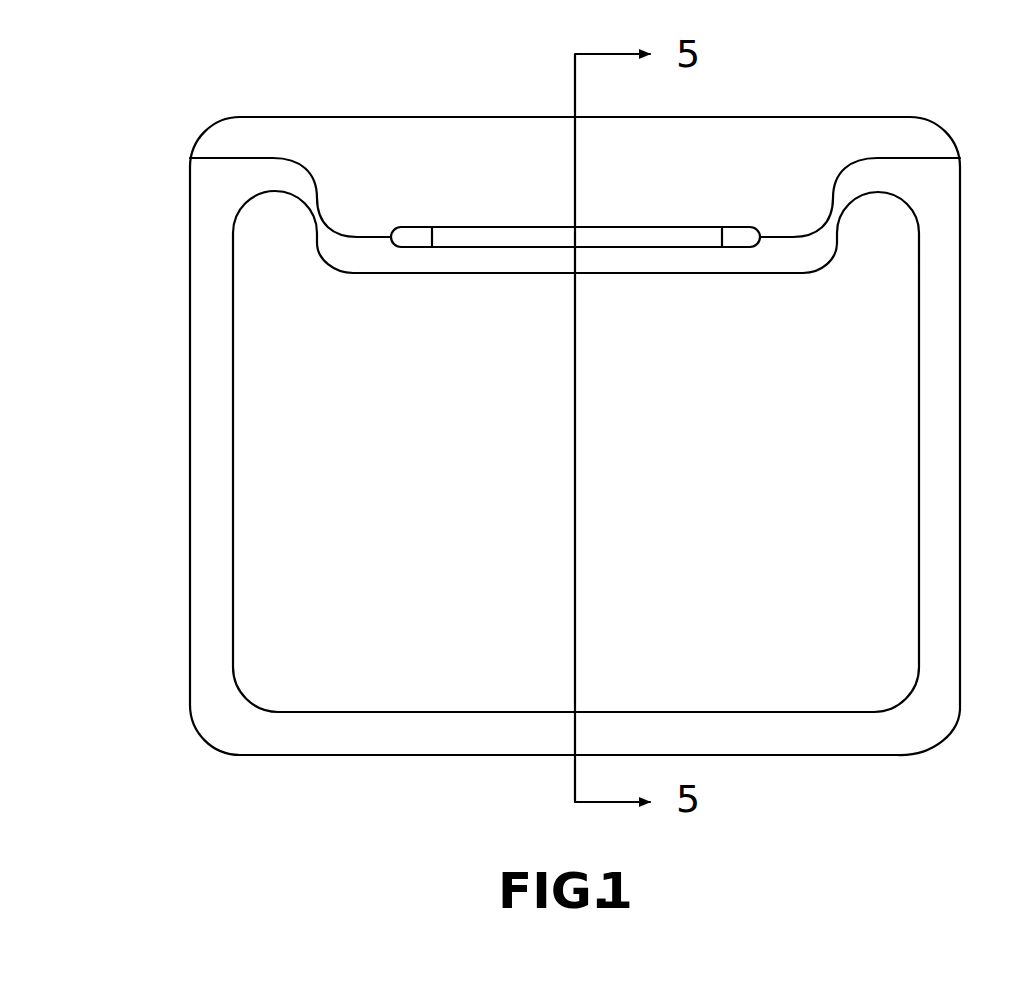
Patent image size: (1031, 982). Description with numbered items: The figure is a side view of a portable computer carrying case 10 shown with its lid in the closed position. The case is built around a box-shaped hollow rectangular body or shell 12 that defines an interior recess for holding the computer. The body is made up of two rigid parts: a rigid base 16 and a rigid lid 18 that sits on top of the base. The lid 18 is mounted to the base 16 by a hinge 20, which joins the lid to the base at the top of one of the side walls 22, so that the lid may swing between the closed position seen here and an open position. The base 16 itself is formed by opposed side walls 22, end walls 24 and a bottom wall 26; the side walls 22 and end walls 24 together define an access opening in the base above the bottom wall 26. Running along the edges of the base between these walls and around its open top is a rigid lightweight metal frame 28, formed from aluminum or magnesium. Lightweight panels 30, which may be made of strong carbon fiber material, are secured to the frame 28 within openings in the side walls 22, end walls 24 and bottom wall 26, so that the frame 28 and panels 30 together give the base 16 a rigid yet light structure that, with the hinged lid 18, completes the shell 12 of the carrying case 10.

The portable computer carrying case 10 is at (224, 99).
The body or shell 12 is at (838, 117).
The base 16 is at (966, 306).
The lid 18 is at (292, 117).
The hinge 20 is at (520, 227).
The side walls 22 is at (763, 489).
The end walls 24 is at (190, 620).
The bottom wall 26 is at (733, 755).
The metal frame 28 is at (918, 713).
The panels 30 is at (313, 673).